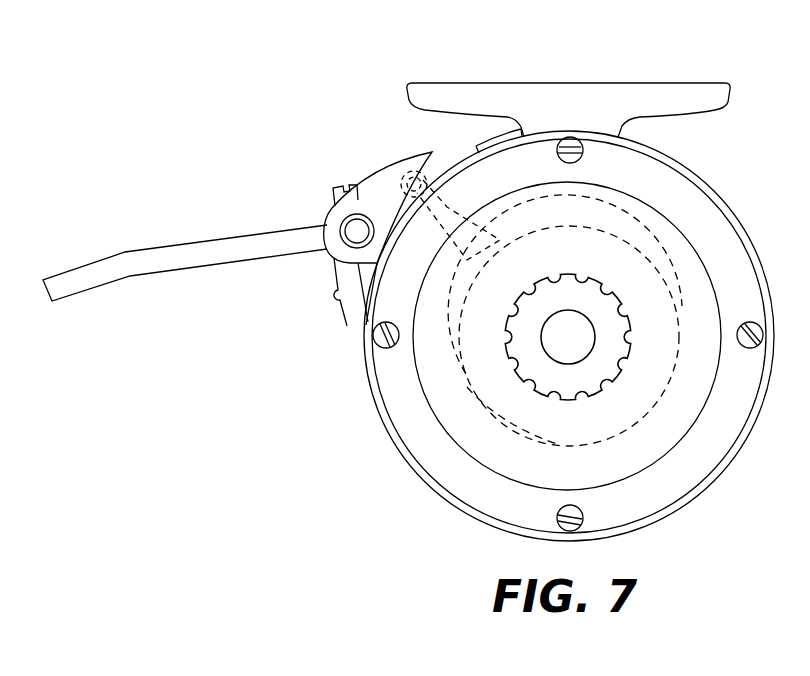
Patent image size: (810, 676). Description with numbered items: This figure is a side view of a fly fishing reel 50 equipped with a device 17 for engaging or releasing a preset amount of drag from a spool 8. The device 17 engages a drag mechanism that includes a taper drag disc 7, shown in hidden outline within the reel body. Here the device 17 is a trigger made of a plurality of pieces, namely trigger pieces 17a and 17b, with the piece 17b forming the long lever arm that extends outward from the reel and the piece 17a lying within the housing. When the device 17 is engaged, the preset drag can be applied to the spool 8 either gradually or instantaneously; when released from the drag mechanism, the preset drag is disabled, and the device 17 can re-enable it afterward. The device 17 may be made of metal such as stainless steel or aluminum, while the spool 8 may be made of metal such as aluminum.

The fly fishing reel 50 is at (258, 65).
The spool 8 is at (450, 475).
The taper drag disc 7 is at (548, 426).
The device 17 is at (98, 206).
The trigger piece 17a is at (447, 194).
The trigger piece 17b is at (210, 247).